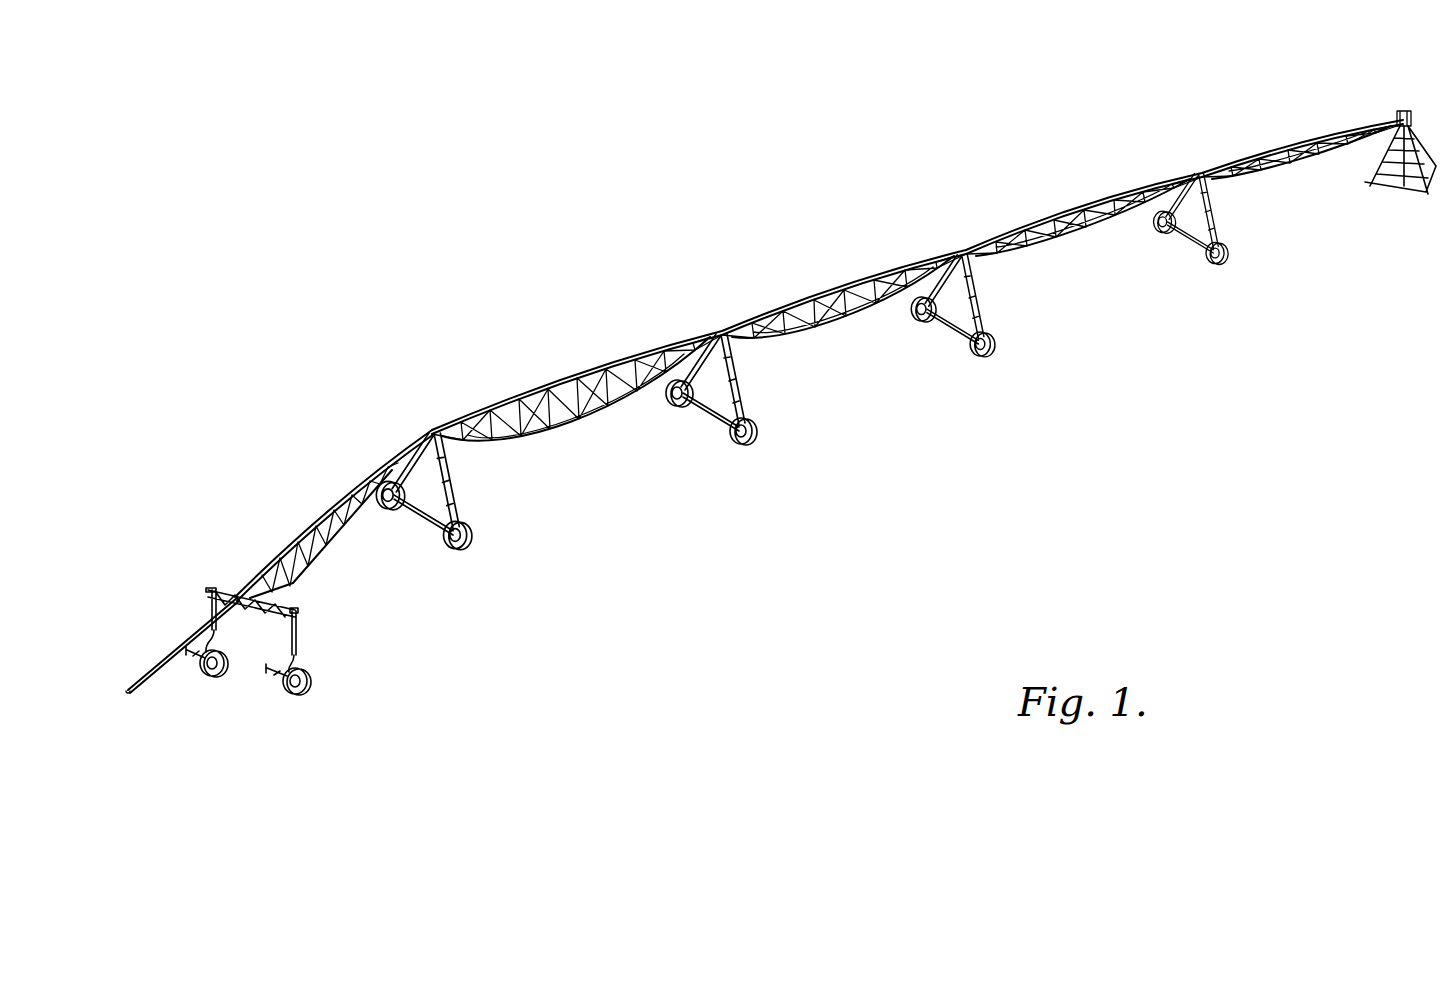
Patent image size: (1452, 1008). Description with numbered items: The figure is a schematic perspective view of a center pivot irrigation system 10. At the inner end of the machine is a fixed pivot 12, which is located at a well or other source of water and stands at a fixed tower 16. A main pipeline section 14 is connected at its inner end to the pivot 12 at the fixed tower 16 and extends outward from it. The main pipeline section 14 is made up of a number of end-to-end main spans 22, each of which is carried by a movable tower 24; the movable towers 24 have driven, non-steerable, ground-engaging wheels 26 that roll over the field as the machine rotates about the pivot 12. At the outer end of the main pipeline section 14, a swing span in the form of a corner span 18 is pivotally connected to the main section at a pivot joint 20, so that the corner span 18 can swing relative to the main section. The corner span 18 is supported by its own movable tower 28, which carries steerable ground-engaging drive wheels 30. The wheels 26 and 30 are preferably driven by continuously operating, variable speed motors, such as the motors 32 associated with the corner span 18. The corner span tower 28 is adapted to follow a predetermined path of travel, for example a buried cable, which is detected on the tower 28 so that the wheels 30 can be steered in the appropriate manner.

The irrigation system 10 is at (845, 205).
The fixed pivot 12 is at (1410, 119).
The main pipeline section 14 is at (722, 311).
The fixed tower 16 is at (1374, 182).
The corner span 18 is at (300, 511).
The pivot joint 20 is at (432, 420).
The main spans 22 is at (574, 364).
The movable towers 24 is at (455, 488).
The ground-engaging wheels 26 is at (394, 512).
The movable tower 28 is at (305, 628).
The steerable ground-engaging drive wheels 30 is at (312, 685).
The motors 32 is at (273, 668).